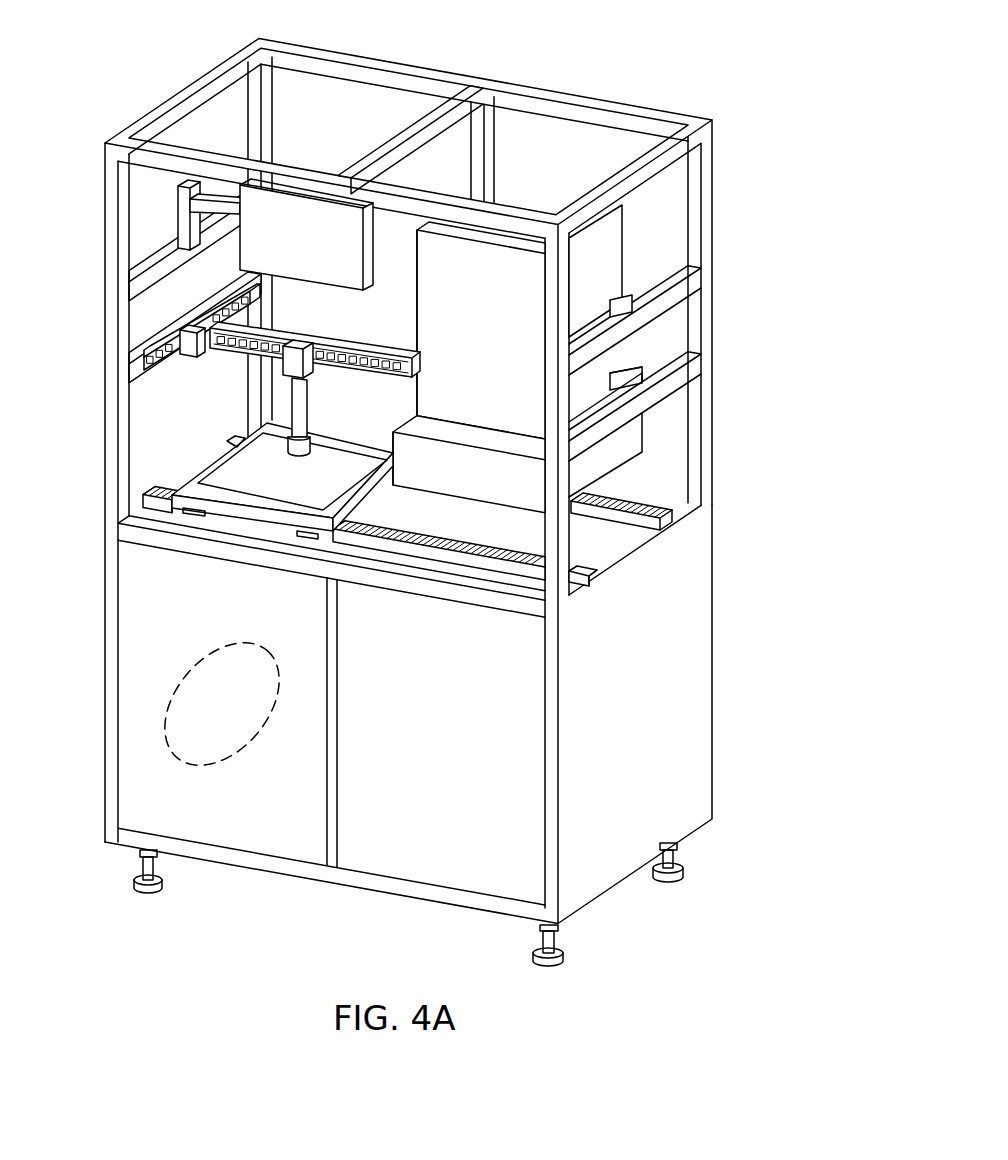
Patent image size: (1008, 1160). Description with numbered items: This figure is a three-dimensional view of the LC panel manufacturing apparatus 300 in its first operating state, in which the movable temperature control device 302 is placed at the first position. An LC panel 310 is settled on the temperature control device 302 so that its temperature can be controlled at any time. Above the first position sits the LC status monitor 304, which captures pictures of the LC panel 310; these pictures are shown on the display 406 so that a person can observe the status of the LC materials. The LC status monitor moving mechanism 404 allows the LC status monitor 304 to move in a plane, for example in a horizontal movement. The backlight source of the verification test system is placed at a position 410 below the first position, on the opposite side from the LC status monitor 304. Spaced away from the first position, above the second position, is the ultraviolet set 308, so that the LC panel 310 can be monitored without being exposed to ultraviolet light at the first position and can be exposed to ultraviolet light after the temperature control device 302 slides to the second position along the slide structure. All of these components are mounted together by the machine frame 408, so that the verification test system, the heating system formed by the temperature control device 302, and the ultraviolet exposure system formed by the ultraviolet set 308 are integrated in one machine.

The LC panel manufacturing apparatus 300 is at (130, 38).
The temperature control device 302 is at (187, 485).
The LC status monitor 304 is at (300, 402).
The ultraviolet set 308 is at (610, 262).
The LC panel 310 is at (225, 475).
The LC status monitor moving mechanism 404 is at (212, 323).
The display 406 is at (250, 258).
The machine frame 408 is at (675, 713).
The position of the backlight source 410 is at (168, 692).